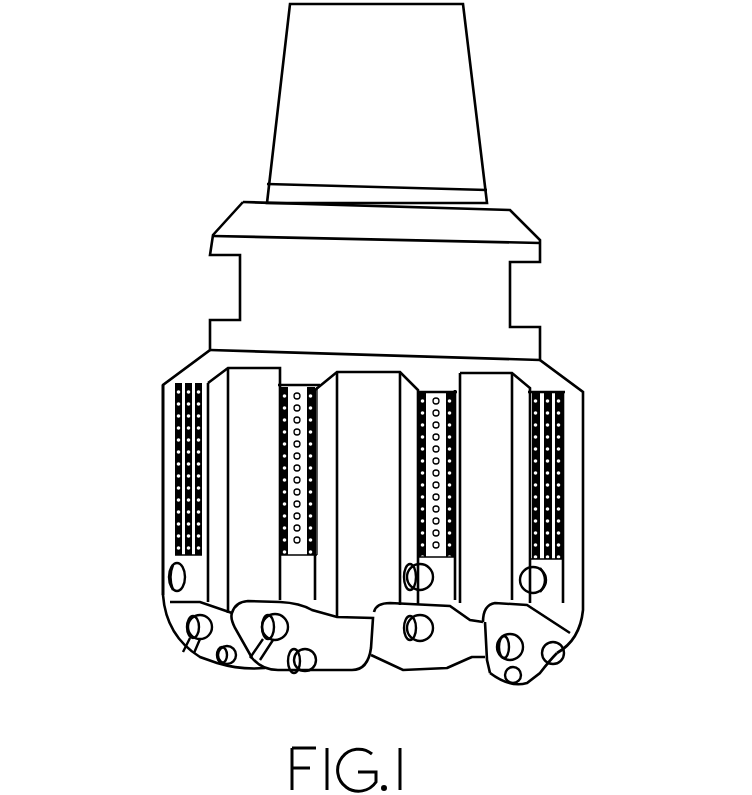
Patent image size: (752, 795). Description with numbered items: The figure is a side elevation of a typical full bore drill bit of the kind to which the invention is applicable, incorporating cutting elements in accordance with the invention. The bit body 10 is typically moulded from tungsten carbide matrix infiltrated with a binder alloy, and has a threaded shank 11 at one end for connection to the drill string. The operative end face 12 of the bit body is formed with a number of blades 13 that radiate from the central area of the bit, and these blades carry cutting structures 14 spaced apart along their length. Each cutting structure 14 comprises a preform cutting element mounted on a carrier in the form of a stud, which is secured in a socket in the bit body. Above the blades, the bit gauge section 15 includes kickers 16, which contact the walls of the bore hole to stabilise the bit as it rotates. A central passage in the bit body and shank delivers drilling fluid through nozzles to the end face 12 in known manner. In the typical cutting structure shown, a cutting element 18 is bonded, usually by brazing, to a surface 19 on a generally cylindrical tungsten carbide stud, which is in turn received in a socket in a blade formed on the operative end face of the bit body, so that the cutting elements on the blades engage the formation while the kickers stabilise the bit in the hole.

The bit body 10 is at (483, 576).
The threaded shank 11 is at (453, 163).
The end face 12 is at (497, 684).
The blade 13 is at (405, 670).
The cutting structure 14 is at (220, 663).
The bit gauge section 15 is at (150, 468).
The kicker 16 is at (453, 420).
The cutting element 18 is at (285, 670).
The surface 19 is at (313, 672).